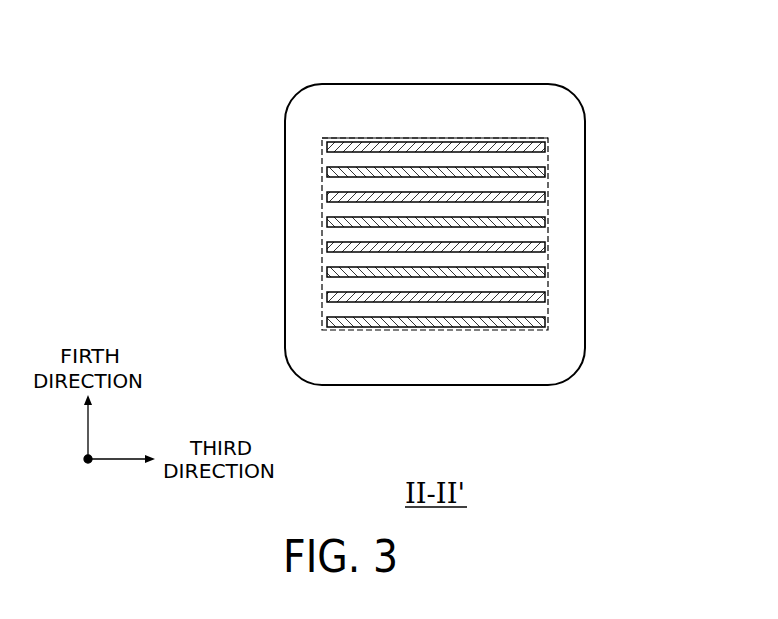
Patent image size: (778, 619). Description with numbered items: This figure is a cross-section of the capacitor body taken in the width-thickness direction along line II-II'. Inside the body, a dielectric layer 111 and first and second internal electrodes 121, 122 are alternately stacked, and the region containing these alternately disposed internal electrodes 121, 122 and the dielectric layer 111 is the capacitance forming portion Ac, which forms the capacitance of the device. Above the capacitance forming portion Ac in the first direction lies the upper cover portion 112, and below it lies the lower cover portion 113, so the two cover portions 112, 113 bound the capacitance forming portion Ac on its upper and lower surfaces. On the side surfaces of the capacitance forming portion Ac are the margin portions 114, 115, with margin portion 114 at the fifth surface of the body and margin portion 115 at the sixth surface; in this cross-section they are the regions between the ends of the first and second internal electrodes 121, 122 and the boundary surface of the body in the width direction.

The dielectric layer 111 is at (364, 158).
The upper cover portion 112 is at (402, 102).
The lower cover portion 113 is at (402, 367).
The margin portion 114 is at (300, 317).
The margin portion 115 is at (573, 233).
The first internal electrode 121 is at (465, 140).
The second internal electrode 122 is at (507, 220).
The capacitance forming portion Ac is at (568, 316).